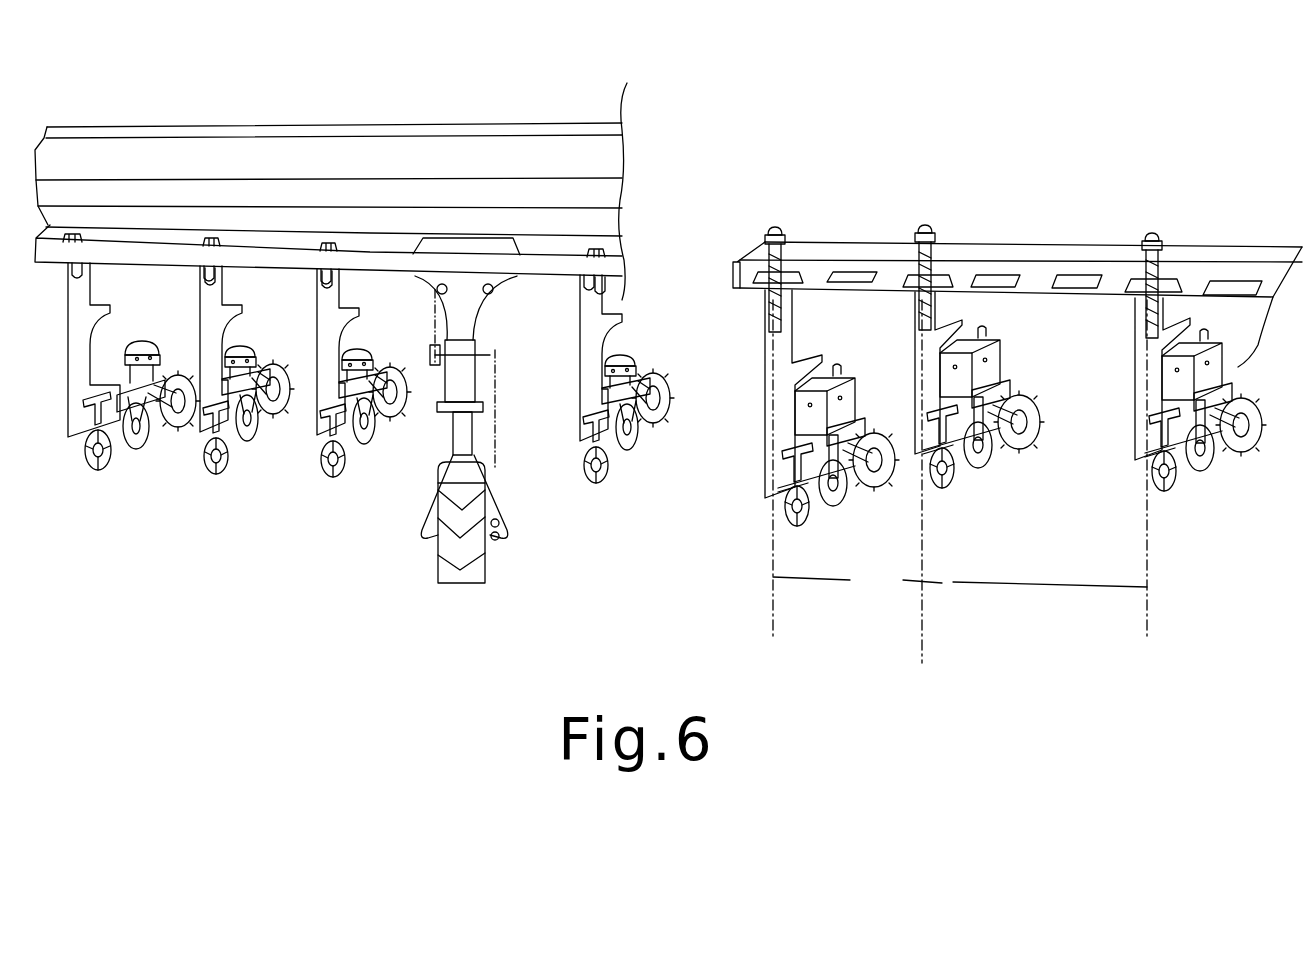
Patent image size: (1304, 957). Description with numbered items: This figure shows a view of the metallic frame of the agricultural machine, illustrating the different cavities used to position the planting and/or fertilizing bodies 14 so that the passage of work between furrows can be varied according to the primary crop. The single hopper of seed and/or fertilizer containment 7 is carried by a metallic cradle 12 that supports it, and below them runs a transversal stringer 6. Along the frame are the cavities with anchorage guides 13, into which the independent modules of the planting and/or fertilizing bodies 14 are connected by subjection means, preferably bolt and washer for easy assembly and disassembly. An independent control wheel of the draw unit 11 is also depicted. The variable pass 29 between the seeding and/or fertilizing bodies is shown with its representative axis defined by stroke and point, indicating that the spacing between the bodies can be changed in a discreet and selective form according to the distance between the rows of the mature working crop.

The single hopper of seed and/or fertilizer containment 7 is at (386, 157).
The metallic cradle to support the single hopper 12 is at (623, 210).
The transversal stringer 6 is at (737, 262).
The cavities with anchorage guides 13 is at (1073, 274).
The planting and/or fertilizing bodies 14 is at (760, 448).
The independent control wheel of the draw unit 11 is at (452, 575).
The variable pass between the seeding bodies and/or fertilizers 29 is at (858, 570).